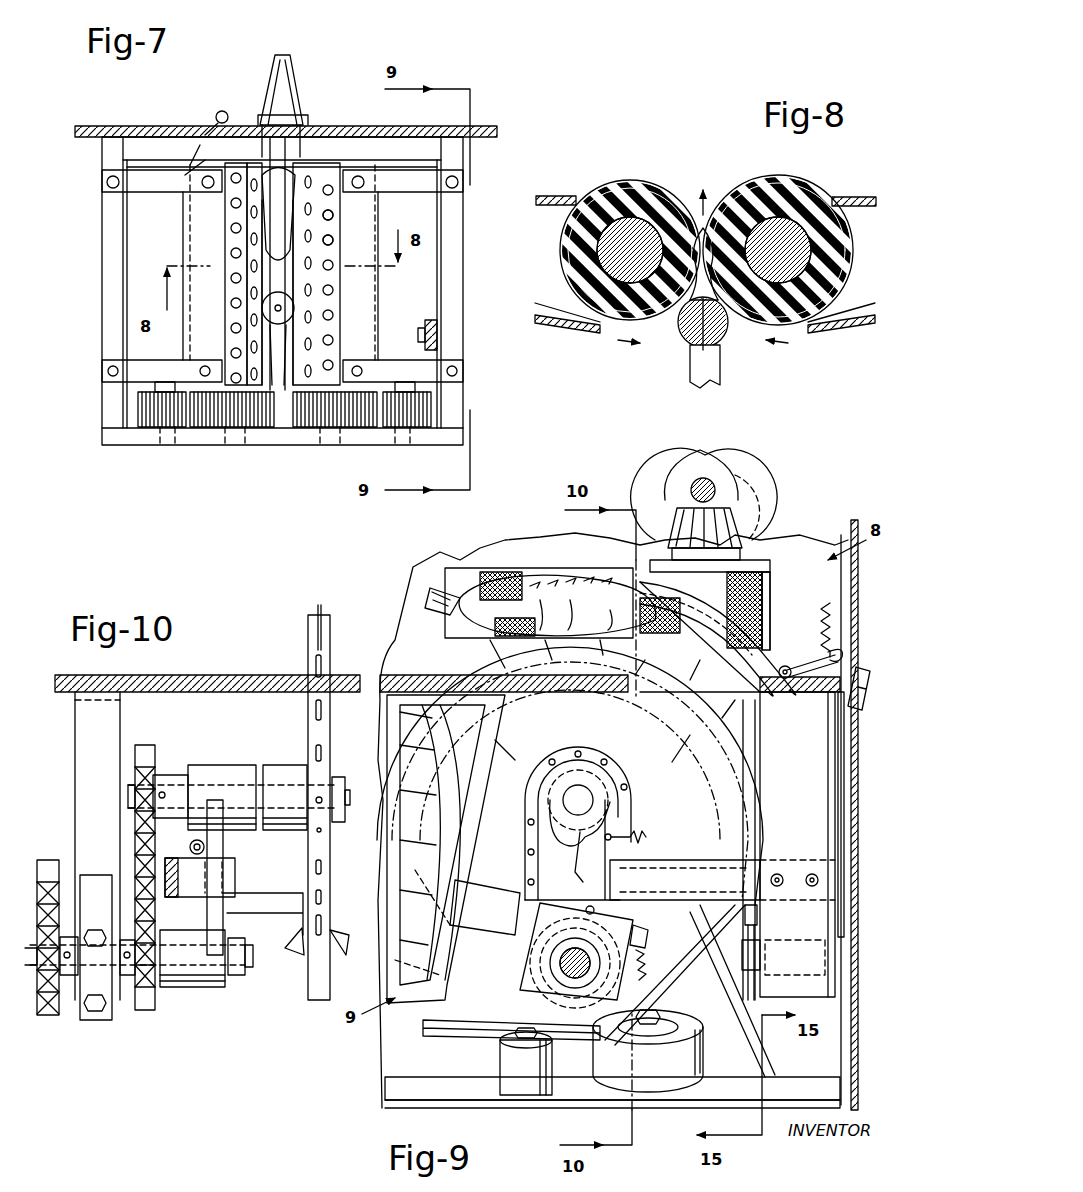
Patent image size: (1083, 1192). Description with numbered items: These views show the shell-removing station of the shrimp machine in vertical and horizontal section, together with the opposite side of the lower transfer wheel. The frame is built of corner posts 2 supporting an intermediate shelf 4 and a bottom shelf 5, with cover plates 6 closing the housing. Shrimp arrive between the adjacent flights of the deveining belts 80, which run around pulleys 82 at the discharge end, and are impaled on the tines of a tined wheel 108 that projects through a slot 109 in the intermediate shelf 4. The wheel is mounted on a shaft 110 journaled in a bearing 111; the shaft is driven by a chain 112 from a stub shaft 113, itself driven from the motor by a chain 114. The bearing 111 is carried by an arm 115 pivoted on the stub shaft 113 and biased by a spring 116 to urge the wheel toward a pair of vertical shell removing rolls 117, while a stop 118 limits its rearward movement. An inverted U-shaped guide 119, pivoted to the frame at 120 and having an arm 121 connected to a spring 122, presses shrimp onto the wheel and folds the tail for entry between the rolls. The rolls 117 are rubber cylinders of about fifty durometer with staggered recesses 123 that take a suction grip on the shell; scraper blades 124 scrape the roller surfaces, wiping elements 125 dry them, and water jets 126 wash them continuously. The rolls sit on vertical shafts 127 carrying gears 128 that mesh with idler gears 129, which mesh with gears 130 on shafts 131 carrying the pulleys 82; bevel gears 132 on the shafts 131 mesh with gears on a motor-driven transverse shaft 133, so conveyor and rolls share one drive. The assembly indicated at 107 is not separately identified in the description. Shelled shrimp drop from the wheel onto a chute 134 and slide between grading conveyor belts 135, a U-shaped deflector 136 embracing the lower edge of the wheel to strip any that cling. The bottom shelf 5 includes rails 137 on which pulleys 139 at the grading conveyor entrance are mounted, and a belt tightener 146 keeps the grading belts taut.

In FIG. 9, the corner posts 2 is at (830, 1066).
In FIG. 7, the intermediate shelf 4 is at (120, 126).
In FIG. 10, the intermediate shelf 4 is at (243, 675).
In FIG. 9, the intermediate shelf 4 is at (418, 675).
In FIG. 9, the bottom shelf 5 is at (420, 1090).
In FIG. 9, the cover plates 6 is at (851, 623).
In FIG. 9, the belts 80 is at (476, 575).
In FIG. 9, the pulleys 82 is at (752, 560).
In FIG. 7, the roller mechanism 107 is at (95, 415).
In FIG. 8, the roller mechanism 107 is at (650, 160).
In FIG. 9, the roller mechanism 107 is at (838, 1019).
In FIG. 8, the tined wheel 108 is at (720, 369).
In FIG. 10, the tined wheel 108 is at (302, 958).
In FIG. 9, the tined wheel 108 is at (618, 723).
In FIG. 10, the slot 109 is at (302, 672).
In FIG. 9, the slot 109 is at (760, 692).
In FIG. 9, the shaft 110 is at (592, 792).
In FIG. 10, the bearing 111 is at (240, 770).
In FIG. 10, the chain 112 is at (148, 1010).
In FIG. 9, the chain 112 is at (525, 857).
In FIG. 10, the stub shaft 113 is at (253, 970).
In FIG. 9, the stub shaft 113 is at (522, 1001).
In FIG. 10, the chain 114 is at (50, 1015).
In FIG. 10, the arm 115 is at (223, 849).
In FIG. 9, the arm 115 is at (612, 823).
In FIG. 10, the spring 116 is at (190, 846).
In FIG. 9, the spring 116 is at (678, 839).
In FIG. 7, the shell removing rolls 117 is at (228, 219).
In FIG. 8, the shell removing rolls 117 is at (690, 190).
In FIG. 9, the shell removing rolls 117 is at (840, 763).
In FIG. 10, the stop 118 is at (236, 879).
In FIG. 9, the stop 118 is at (745, 871).
In FIG. 7, the inverted U-shaped guide 119 is at (300, 80).
In FIG. 9, the inverted U-shaped guide 119 is at (770, 609).
In FIG. 7, the pivot 120 is at (310, 118).
In FIG. 9, the pivot 120 is at (788, 666).
In FIG. 9, the arm 121 is at (846, 656).
In FIG. 9, the spring 122 is at (840, 607).
In FIG. 7, the recesses 123 is at (330, 246).
In FIG. 8, the recesses 123 is at (560, 257).
In FIG. 8, the scraper blades 124 is at (545, 195).
In FIG. 7, the wiping elements 125 is at (190, 239).
In FIG. 8, the wiping elements 125 is at (560, 326).
In FIG. 7, the water jets 126 is at (205, 126).
In FIG. 9, the water jets 126 is at (870, 691).
In FIG. 7, the vertical shafts 127 is at (297, 428).
In FIG. 8, the vertical shafts 127 is at (598, 267).
In FIG. 7, the gears 128 is at (232, 428).
In FIG. 9, the gears 128 is at (757, 961).
In FIG. 7, the idler gears 129 is at (168, 428).
In FIG. 9, the gears 130 is at (730, 1021).
In FIG. 9, the shafts 131 is at (760, 919).
In FIG. 9, the bevel gears 132 is at (716, 481).
In FIG. 9, the transverse shaft 133 is at (712, 471).
In FIG. 9, the chute 134 is at (656, 993).
In FIG. 9, the grading conveyor belts 135 is at (435, 1063).
In FIG. 10, the U-shaped deflector 136 is at (338, 958).
In FIG. 9, the U-shaped deflector 136 is at (497, 956).
In FIG. 9, the rails 137 is at (388, 1110).
In FIG. 9, the pulleys 139 is at (690, 1091).
In FIG. 9, the belt tightener 146 is at (552, 1096).